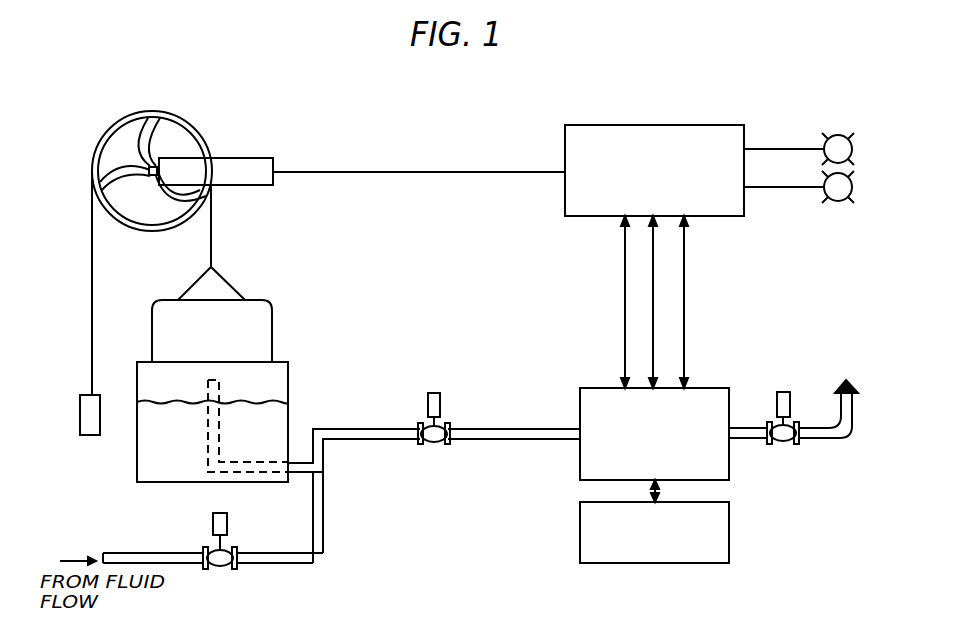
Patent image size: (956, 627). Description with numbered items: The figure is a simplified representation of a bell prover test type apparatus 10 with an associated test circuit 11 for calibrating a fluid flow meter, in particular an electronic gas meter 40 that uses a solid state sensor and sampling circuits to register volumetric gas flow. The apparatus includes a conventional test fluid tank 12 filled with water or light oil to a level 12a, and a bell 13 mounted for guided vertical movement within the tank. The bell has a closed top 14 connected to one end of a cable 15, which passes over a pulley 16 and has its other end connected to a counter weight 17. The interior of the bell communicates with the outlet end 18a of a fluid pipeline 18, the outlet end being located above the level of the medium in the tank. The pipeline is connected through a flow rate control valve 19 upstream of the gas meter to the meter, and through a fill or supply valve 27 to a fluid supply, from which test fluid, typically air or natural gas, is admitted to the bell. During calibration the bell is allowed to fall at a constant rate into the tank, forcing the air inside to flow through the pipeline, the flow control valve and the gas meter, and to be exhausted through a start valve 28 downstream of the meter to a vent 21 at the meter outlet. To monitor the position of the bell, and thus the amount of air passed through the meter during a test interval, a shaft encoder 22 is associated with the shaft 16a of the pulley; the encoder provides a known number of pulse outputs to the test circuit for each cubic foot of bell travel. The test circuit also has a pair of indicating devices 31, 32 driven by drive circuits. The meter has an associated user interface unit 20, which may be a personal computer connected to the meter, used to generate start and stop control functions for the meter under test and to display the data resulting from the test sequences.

The bell prover test type apparatus 10 is at (345, 343).
The test circuit 11 is at (662, 195).
The test fluid tank 12 is at (150, 453).
The level 12a is at (288, 398).
The bell 13 is at (263, 330).
The closed top 14 is at (244, 298).
The cable 15 is at (92, 277).
The pulley 16 is at (105, 118).
The shaft 16a is at (160, 160).
The counter weight 17 is at (80, 403).
The fluid pipeline 18 is at (350, 440).
The outlet end 18a is at (222, 380).
The flow rate control valve 19 is at (436, 444).
The user interface unit 20 is at (654, 532).
The vent 21 is at (857, 386).
The shaft encoder 22 is at (230, 158).
The fill or supply valve 27 is at (215, 570).
The start valve 28 is at (783, 446).
The indicating device 31 is at (852, 149).
The indicating device 32 is at (852, 187).
The electronic gas meter 40 is at (663, 471).